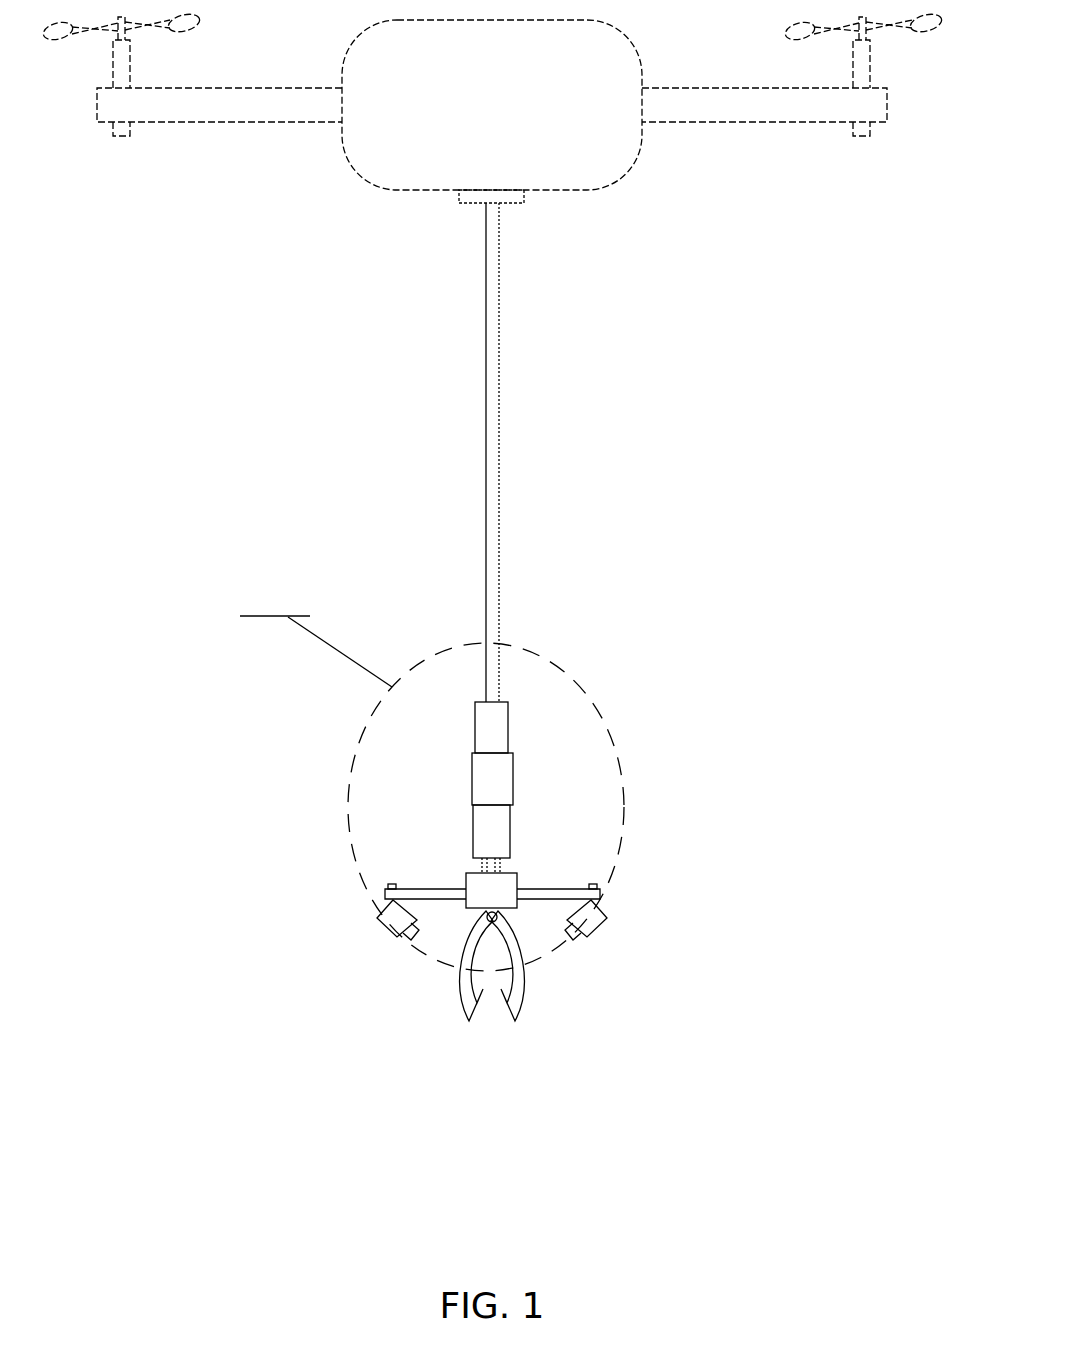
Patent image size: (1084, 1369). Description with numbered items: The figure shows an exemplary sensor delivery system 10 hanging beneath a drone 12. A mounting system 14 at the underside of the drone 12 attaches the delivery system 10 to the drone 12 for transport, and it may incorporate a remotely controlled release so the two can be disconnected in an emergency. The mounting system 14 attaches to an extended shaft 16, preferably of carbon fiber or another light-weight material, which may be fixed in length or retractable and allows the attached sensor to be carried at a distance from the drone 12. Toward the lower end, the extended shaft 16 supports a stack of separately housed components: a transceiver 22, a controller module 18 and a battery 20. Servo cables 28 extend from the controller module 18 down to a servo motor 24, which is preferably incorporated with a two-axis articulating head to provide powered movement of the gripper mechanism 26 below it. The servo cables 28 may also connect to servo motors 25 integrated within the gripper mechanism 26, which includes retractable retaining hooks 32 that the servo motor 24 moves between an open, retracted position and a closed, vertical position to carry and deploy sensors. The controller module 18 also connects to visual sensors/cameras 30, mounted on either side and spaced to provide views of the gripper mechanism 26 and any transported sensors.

The sensor delivery system 10 is at (386, 361).
The drone 12 is at (633, 153).
The mounting system 14 is at (505, 198).
The extended shaft 16 is at (498, 436).
The controller module 18 is at (497, 780).
The battery 20 is at (500, 826).
The transceiver 22 is at (510, 710).
The servo motor 24 is at (500, 897).
The servo motors 25 is at (476, 930).
The gripper mechanism 26 is at (552, 1024).
The servo cables 28 is at (482, 866).
The visual sensors/cameras 30 is at (387, 909).
The retractable retaining hooks 32 is at (515, 1020).